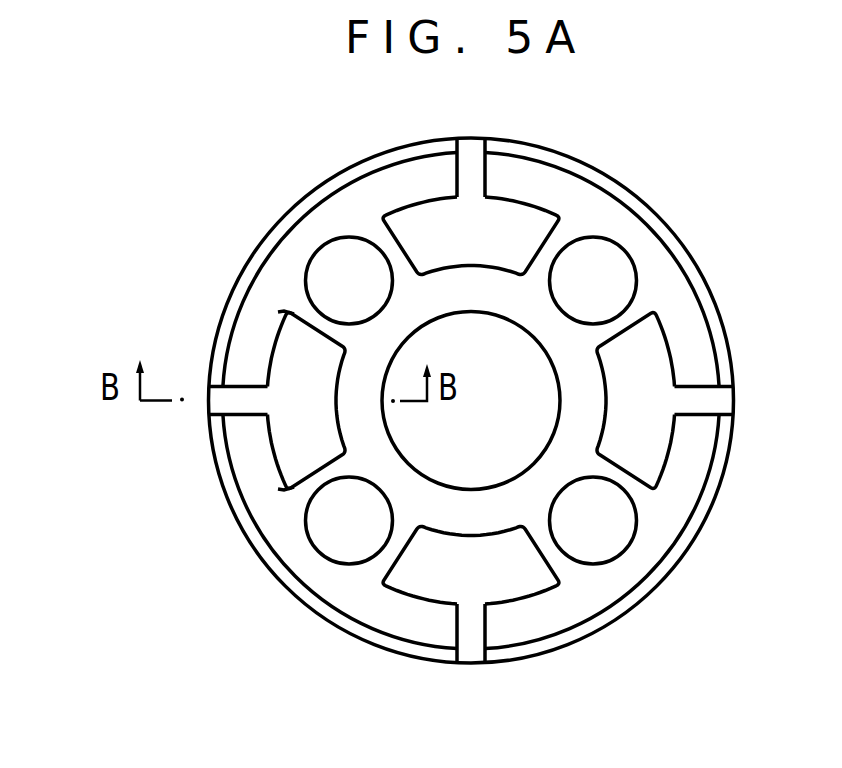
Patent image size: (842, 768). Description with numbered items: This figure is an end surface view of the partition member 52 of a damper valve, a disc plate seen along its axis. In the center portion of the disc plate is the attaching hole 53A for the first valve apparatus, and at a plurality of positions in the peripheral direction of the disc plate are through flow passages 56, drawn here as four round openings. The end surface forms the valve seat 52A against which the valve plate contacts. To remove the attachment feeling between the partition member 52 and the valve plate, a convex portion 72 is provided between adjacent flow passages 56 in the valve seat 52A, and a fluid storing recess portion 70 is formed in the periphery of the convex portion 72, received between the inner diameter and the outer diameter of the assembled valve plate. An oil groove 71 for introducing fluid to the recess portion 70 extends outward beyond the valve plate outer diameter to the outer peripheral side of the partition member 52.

The partition member 52 is at (263, 233).
The valve seat 52A is at (292, 295).
The attaching hole 53A is at (487, 313).
The through flow passage 56 is at (338, 248).
The fluid storing recess portion 70 is at (287, 440).
The oil groove 71 is at (243, 407).
The convex portion 72 is at (300, 312).